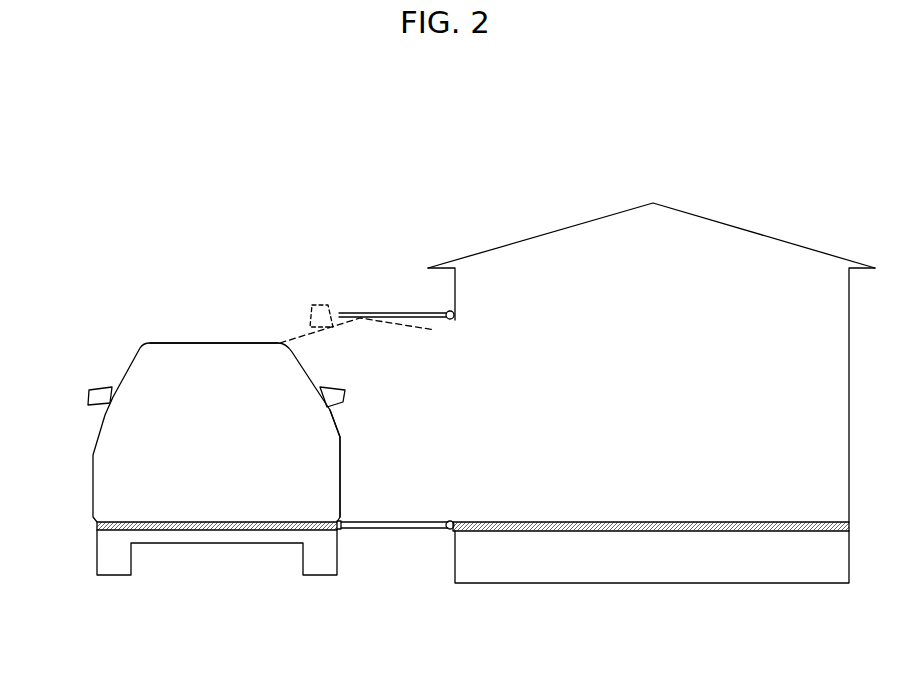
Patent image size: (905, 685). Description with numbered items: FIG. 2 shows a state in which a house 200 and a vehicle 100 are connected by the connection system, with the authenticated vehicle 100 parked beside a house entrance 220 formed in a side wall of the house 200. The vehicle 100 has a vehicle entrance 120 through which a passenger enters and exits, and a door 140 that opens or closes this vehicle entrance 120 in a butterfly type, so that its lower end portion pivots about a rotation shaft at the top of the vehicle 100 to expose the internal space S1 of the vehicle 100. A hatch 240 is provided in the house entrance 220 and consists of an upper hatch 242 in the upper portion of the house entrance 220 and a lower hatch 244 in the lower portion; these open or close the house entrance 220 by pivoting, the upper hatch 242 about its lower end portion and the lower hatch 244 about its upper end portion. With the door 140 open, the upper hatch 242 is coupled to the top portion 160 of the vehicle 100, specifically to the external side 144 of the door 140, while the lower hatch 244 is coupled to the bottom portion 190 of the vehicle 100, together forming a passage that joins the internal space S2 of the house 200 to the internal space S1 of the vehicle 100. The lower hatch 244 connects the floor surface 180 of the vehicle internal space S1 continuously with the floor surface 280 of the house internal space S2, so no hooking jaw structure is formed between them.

The vehicle 100 is at (184, 439).
The vehicle entrance 120 is at (318, 433).
The door 140 is at (333, 418).
The external side 144 is at (311, 297).
The top portion 160 is at (236, 339).
The floor surface 180 is at (173, 531).
The bottom portion 190 is at (350, 538).
The house 200 is at (651, 389).
The house entrance 220 is at (470, 380).
The hatch 240 is at (391, 355).
The upper hatch 242 is at (362, 312).
The lower hatch 244 is at (430, 521).
The floor surface 280 is at (577, 532).
The internal space S1 is at (203, 443).
The internal space S2 is at (643, 434).